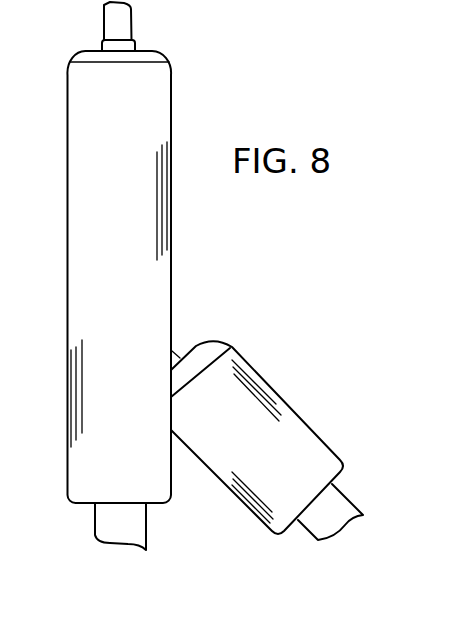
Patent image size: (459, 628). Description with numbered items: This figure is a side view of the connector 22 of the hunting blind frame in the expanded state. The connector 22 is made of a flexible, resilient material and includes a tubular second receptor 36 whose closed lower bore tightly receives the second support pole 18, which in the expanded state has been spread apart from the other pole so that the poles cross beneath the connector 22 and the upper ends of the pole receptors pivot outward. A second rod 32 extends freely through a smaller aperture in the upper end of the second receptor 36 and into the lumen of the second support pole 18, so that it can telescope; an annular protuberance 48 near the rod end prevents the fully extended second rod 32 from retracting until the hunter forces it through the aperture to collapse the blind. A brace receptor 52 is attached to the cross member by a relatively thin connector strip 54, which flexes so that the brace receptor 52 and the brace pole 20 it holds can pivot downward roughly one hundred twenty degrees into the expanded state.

The second support pole 18 is at (128, 527).
The brace pole 20 is at (352, 504).
The connector 22 is at (215, 277).
The second rod 32 is at (123, 23).
The second receptor 36 is at (172, 110).
The annular protuberance 48 is at (102, 44).
The brace receptor 52 is at (303, 438).
The connector strip 54 is at (178, 362).